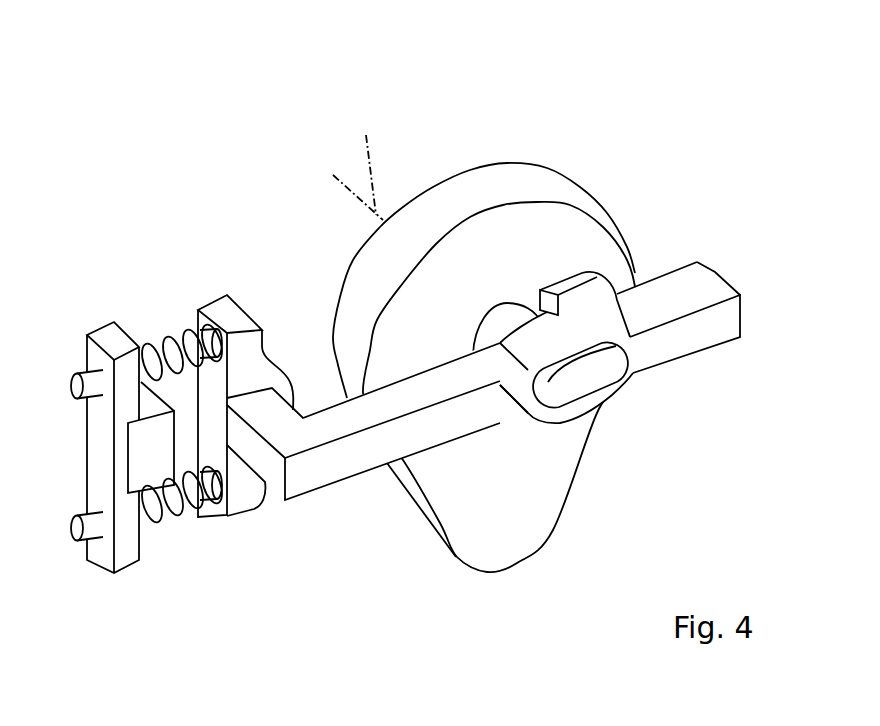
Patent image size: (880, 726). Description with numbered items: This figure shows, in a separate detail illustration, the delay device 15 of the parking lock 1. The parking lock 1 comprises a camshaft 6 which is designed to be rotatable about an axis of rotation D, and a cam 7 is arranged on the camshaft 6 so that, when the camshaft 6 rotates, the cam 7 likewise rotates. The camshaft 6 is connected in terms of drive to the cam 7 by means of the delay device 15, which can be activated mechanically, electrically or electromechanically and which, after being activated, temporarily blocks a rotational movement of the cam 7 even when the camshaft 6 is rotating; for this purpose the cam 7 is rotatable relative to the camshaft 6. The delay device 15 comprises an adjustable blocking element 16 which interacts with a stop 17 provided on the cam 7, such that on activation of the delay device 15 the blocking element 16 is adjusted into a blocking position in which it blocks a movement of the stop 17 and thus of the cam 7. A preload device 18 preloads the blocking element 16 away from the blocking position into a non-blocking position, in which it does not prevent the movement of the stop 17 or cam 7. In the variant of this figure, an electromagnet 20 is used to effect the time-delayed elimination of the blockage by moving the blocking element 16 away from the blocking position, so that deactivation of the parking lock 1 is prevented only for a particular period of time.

The parking lock 1 is at (411, 311).
The camshaft 6 is at (503, 322).
The cam 7 is at (485, 180).
The delay device 15 is at (237, 269).
The blocking element 16 is at (340, 470).
The stop 17 is at (592, 287).
The preload device 18 is at (163, 335).
The electromagnet 20 is at (159, 461).
The axis of rotation D is at (358, 164).